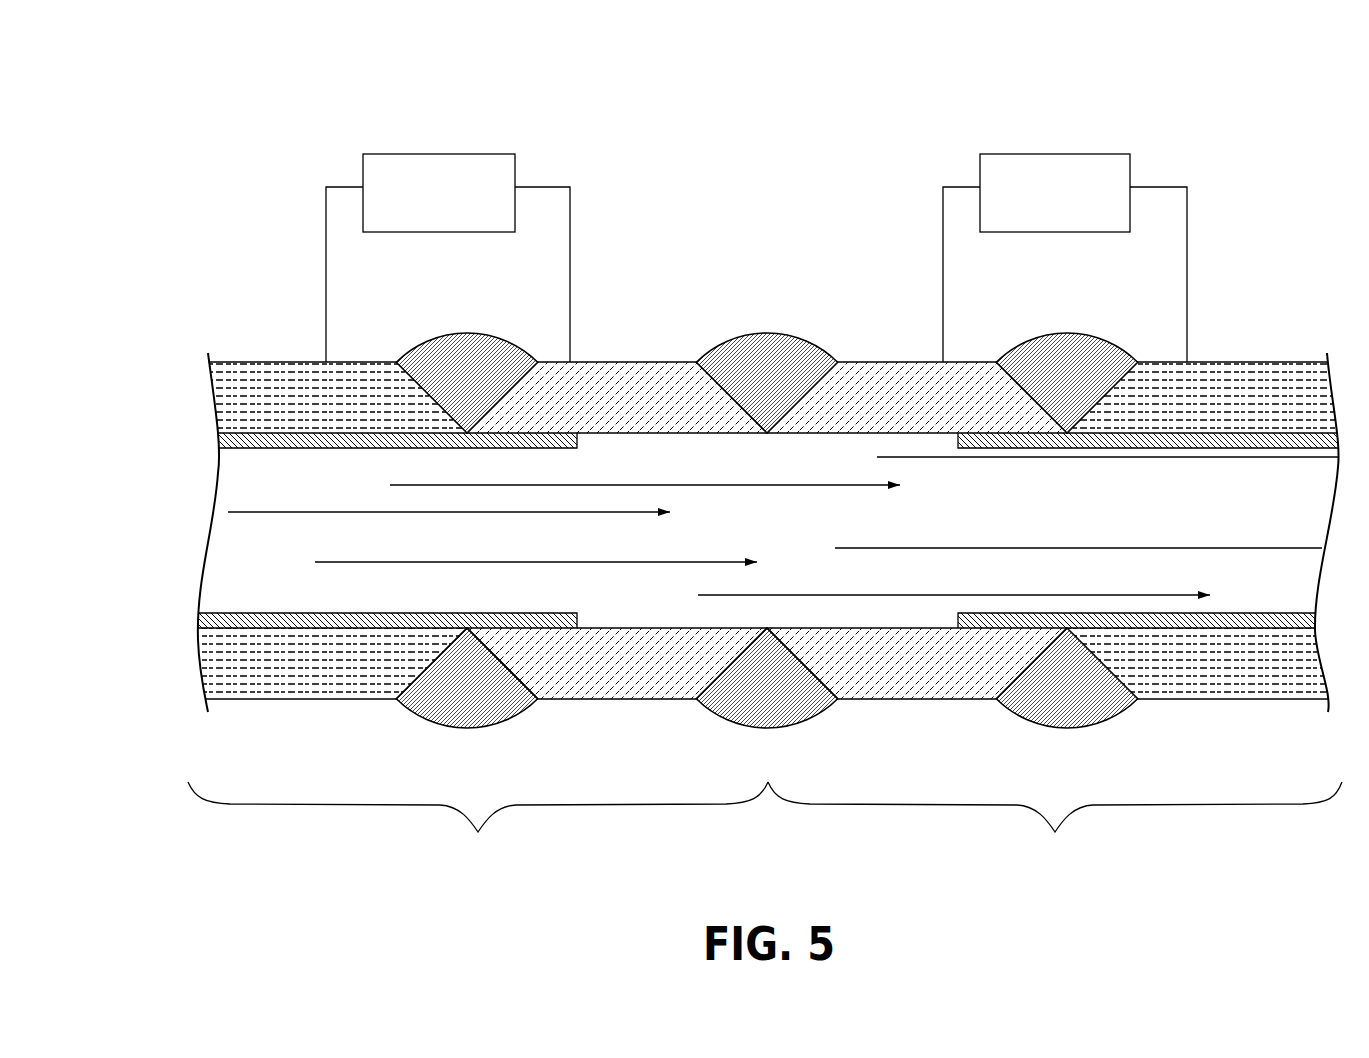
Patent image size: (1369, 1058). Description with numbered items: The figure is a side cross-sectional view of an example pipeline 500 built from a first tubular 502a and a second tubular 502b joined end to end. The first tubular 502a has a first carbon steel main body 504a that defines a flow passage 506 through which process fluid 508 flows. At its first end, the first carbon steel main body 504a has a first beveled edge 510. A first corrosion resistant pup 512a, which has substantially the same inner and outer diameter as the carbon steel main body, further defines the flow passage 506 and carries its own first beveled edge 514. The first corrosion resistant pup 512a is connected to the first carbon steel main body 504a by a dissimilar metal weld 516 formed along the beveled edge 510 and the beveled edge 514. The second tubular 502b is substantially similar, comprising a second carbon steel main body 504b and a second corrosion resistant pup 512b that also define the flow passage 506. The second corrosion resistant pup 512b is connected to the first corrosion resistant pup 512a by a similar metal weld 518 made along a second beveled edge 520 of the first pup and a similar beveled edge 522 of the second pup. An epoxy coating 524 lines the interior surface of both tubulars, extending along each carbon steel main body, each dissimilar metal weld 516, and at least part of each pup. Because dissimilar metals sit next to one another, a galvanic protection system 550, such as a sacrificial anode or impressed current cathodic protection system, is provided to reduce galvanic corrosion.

The pipeline 500 is at (183, 134).
The first tubular 502a is at (478, 828).
The second tubular 502b is at (1055, 828).
The first carbon steel main body 504a is at (272, 362).
The second carbon steel main body 504b is at (1283, 370).
The flow passage 506 is at (1142, 527).
The process fluid 508 is at (275, 513).
The first beveled edge 510 is at (395, 699).
The first corrosion resistant pup 512a is at (650, 370).
The second corrosion resistant pup 512b is at (885, 370).
The first beveled edge 514 is at (542, 699).
The dissimilar metal weld 516 is at (466, 336).
The similar metal weld 518 is at (767, 338).
The second beveled edge 520 is at (693, 699).
The beveled edge 522 is at (838, 699).
The epoxy coating 524 is at (1140, 699).
The galvanic protection system 550 is at (415, 211).